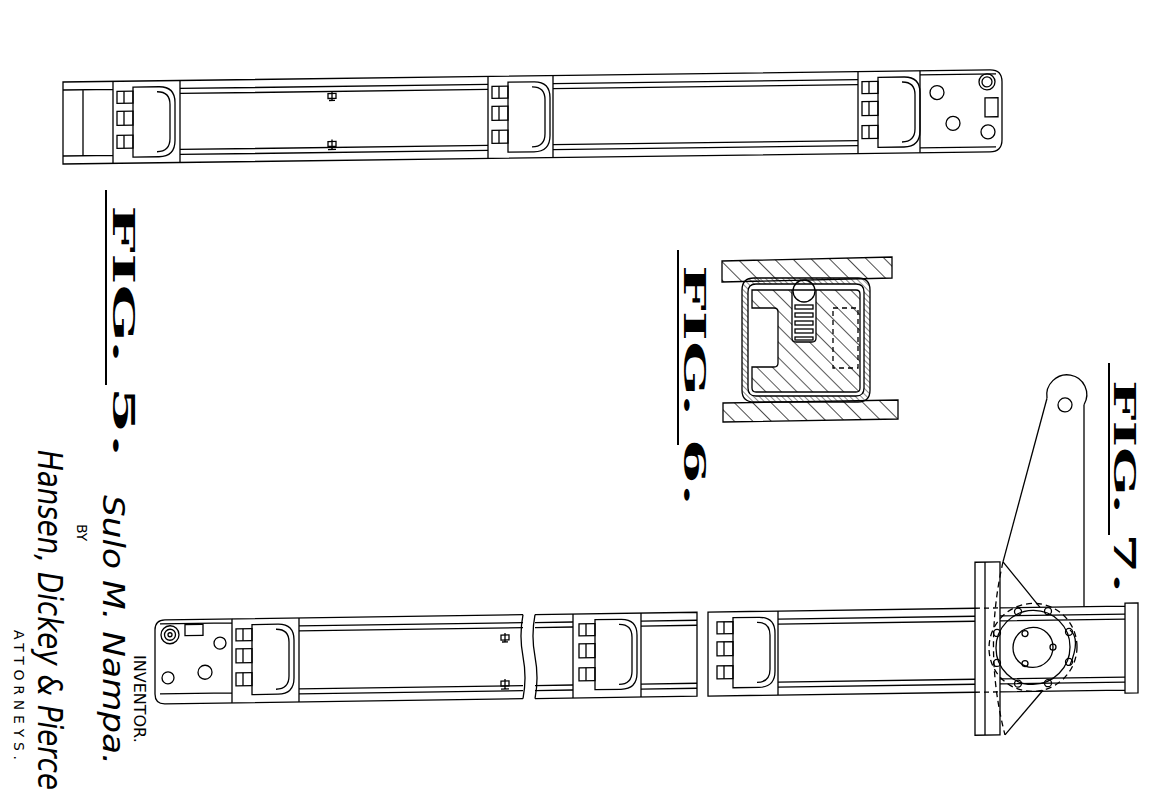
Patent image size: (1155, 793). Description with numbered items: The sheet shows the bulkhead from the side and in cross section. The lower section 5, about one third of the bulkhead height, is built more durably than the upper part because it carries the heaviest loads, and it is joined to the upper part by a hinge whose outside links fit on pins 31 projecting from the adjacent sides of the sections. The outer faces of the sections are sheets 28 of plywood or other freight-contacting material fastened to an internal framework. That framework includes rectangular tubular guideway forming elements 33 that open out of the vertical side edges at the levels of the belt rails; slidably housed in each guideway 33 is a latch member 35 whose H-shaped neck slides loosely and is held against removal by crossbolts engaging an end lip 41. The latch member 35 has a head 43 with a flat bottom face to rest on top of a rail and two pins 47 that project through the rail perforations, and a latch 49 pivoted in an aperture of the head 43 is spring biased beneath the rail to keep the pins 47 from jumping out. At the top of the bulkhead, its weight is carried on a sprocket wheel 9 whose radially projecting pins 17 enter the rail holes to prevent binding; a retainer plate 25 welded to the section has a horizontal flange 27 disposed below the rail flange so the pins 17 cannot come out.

In FIG. 5, the lower section 5 is at (702, 168).
In FIG. 7, the lower section 5 is at (797, 600).
In FIG. 7, the sprocket wheel 9 is at (1040, 686).
In FIG. 7, the radially projecting pin 17 is at (1083, 653).
In FIG. 7, the retainer plate 25 is at (1040, 692).
In FIG. 6, the horizontal flange 27 is at (864, 381).
In FIG. 7, the horizontal flange 27 is at (977, 712).
In FIG. 6, the sheet 28 is at (845, 259).
In FIG. 7, the pin 31 is at (170, 626).
In FIG. 6, the guideway forming element 33 is at (895, 340).
In FIG. 5, the latch member 35 is at (155, 166).
In FIG. 7, the latch member 35 is at (269, 682).
In FIG. 5, the end lip 41 is at (869, 80).
In FIG. 5, the head 43 is at (889, 140).
In FIG. 5, the pin 47 is at (878, 143).
In FIG. 5, the latch 49 is at (863, 110).